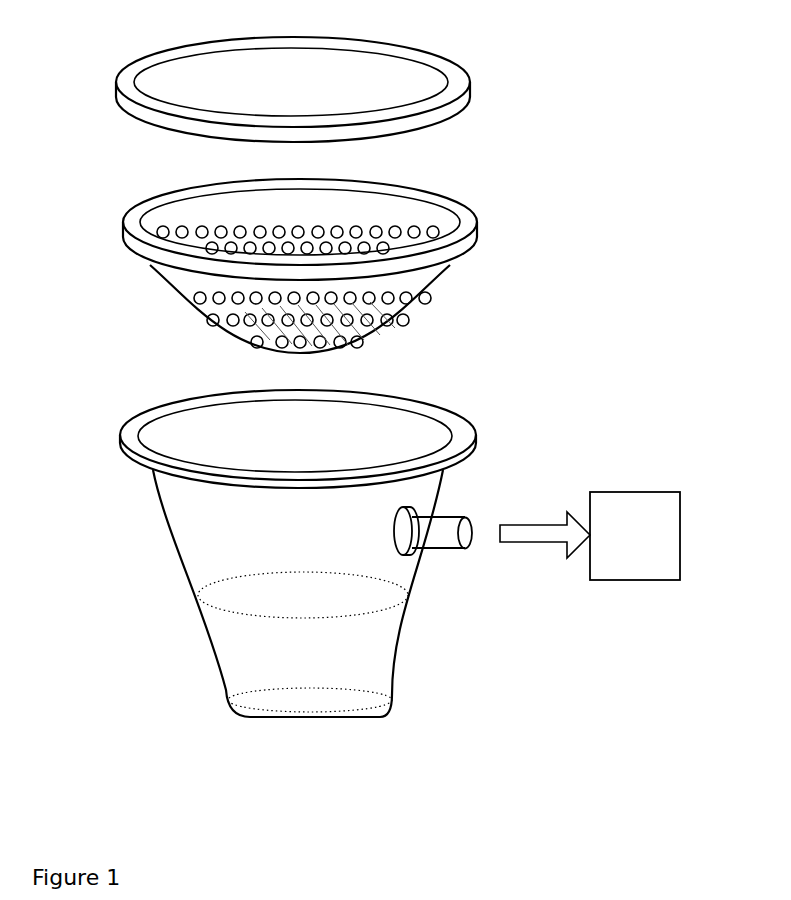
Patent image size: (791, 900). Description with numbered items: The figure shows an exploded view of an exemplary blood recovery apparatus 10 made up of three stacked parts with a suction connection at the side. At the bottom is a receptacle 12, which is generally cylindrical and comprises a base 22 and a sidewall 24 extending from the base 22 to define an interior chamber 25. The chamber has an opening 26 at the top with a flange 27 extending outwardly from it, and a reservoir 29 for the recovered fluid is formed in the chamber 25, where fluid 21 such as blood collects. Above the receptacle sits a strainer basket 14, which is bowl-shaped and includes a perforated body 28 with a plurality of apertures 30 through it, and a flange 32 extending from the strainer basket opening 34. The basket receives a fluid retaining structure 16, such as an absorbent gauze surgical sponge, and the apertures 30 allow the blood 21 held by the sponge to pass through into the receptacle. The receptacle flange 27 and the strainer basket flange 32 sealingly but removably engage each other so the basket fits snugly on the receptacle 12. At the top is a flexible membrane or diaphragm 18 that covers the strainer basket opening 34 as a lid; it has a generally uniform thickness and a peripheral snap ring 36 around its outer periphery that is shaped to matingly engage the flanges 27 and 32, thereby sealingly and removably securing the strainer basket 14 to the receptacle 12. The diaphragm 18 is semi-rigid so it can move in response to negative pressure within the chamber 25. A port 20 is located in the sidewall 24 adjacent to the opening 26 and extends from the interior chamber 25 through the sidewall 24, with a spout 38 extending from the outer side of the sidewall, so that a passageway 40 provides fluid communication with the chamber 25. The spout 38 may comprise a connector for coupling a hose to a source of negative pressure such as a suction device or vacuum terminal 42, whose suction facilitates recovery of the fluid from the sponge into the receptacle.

The blood recovery apparatus 10 is at (319, 802).
The receptacle 12 is at (290, 540).
The strainer basket 14 is at (295, 257).
The fluid retaining structure 16 is at (215, 323).
The diaphragm 18 is at (309, 77).
The port 20 is at (470, 556).
The fluid 21 is at (263, 673).
The base 22 is at (340, 707).
The sidewall 24 is at (165, 538).
The interior chamber 25 is at (213, 547).
The opening 26 is at (400, 430).
The flange 27 is at (125, 433).
The perforated body 28 is at (440, 273).
The reservoir 29 is at (340, 673).
The apertures 30 is at (400, 310).
The strainer basket flange 32 is at (477, 223).
The strainer basket opening 34 is at (382, 212).
The peripheral snap ring 36 is at (470, 95).
The spout 38 is at (450, 514).
The passageway 40 is at (470, 528).
The vacuum terminal 42 is at (590, 536).